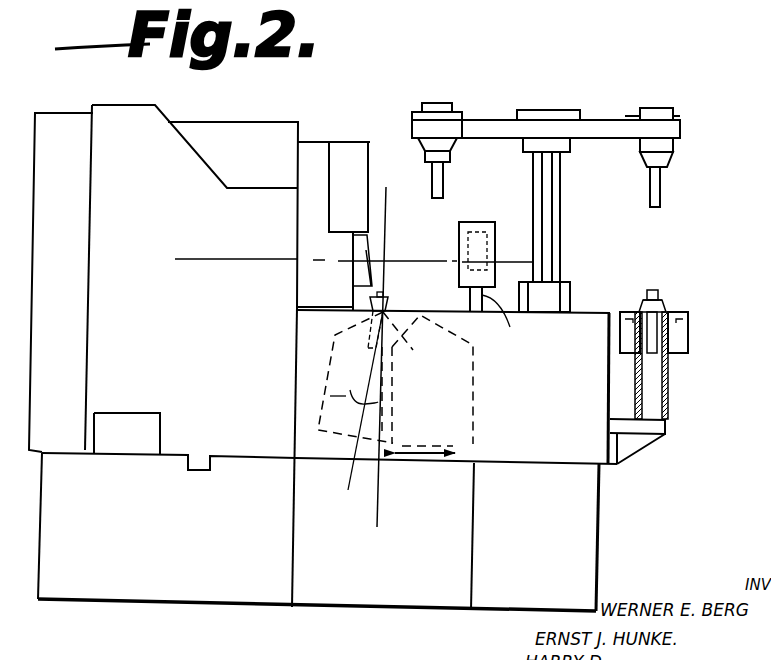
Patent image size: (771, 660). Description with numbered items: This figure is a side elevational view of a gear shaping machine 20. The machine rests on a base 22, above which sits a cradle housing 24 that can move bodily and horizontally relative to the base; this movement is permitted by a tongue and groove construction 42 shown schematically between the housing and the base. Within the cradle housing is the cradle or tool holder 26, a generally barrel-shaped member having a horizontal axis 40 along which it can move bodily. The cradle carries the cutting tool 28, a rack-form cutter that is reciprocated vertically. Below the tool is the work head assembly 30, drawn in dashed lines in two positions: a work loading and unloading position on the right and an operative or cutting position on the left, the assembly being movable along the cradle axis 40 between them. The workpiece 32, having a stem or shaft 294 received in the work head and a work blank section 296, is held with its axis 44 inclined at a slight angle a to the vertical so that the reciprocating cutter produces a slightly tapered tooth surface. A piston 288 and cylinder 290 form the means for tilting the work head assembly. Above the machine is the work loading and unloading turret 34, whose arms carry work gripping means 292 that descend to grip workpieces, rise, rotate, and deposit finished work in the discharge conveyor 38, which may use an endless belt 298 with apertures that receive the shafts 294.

The gear shaping machine 20 is at (120, 612).
The base 22 is at (180, 565).
The cradle housing 24 is at (172, 327).
The cradle or tool holder 26 is at (368, 212).
The cutting tool 28 is at (380, 263).
The work head assembly 30 is at (327, 380).
The workpiece 32 is at (389, 308).
The work loading and unloading turret 34 is at (605, 120).
The discharge conveyor 38 is at (691, 341).
The horizontal axis 40 is at (238, 234).
The tongue and groove construction 42 is at (187, 461).
The axis of the workpiece 44 is at (349, 482).
The piston 288 is at (521, 321).
The cylinder 290 is at (498, 240).
The work gripping means 292 is at (455, 143).
The stem or shaft 294 is at (660, 197).
The work blank section 296 is at (668, 161).
The endless belt 298 is at (665, 312).